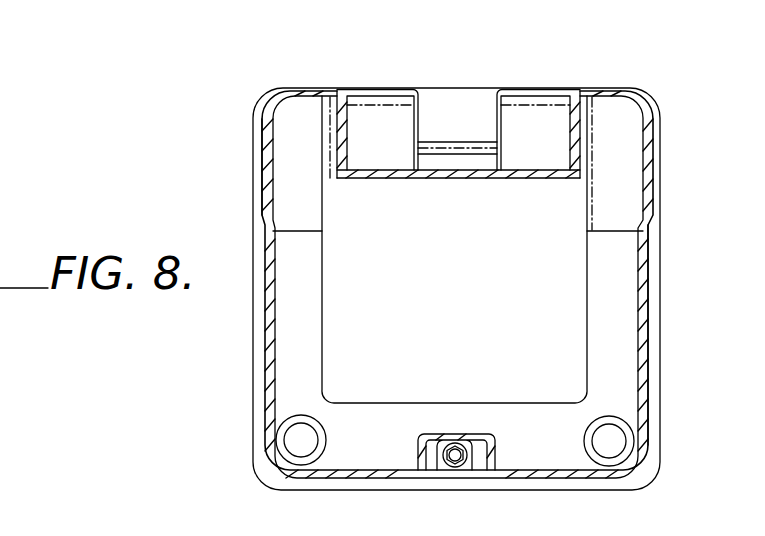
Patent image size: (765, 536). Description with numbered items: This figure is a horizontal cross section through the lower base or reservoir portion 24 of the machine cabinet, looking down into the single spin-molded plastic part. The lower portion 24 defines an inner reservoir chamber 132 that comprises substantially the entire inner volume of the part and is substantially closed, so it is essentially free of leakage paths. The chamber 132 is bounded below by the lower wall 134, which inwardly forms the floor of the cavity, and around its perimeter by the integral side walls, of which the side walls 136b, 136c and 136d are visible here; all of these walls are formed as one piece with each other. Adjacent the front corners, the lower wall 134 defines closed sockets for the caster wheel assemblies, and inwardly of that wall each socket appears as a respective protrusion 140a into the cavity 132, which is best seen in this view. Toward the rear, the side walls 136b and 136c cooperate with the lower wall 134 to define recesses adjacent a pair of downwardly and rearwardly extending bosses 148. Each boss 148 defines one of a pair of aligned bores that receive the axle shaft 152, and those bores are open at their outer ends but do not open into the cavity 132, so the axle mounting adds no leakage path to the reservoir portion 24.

The lower base or reservoir portion 24 is at (656, 161).
The inner reservoir chamber 132 is at (490, 295).
The lower wall 134 is at (552, 373).
The side wall 136b is at (262, 358).
The side wall 136c is at (646, 318).
The side wall 136d is at (467, 179).
The protrusion 140a is at (322, 432).
The boss 148 is at (370, 91).
The axle shaft 152 is at (468, 142).